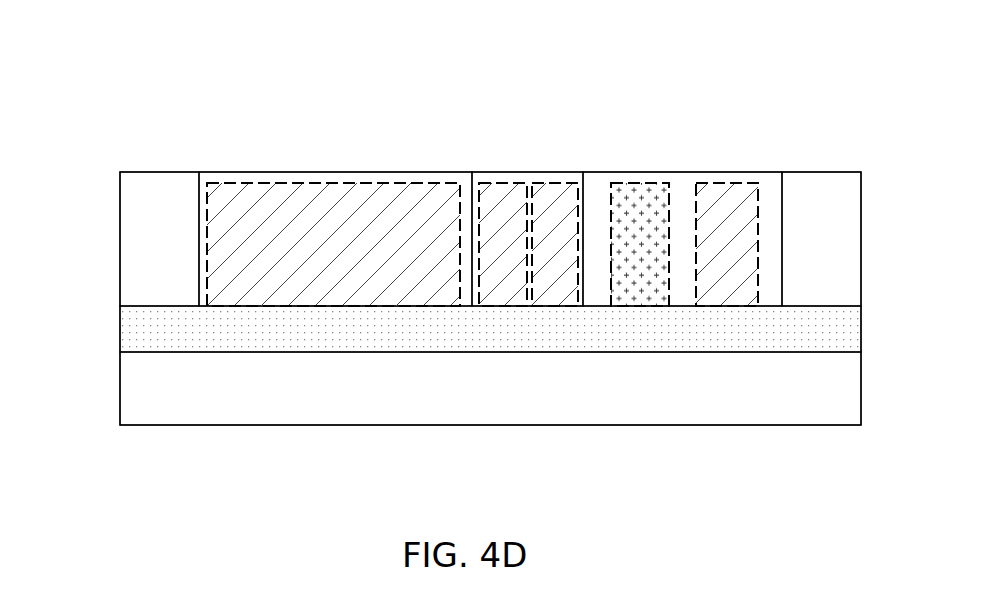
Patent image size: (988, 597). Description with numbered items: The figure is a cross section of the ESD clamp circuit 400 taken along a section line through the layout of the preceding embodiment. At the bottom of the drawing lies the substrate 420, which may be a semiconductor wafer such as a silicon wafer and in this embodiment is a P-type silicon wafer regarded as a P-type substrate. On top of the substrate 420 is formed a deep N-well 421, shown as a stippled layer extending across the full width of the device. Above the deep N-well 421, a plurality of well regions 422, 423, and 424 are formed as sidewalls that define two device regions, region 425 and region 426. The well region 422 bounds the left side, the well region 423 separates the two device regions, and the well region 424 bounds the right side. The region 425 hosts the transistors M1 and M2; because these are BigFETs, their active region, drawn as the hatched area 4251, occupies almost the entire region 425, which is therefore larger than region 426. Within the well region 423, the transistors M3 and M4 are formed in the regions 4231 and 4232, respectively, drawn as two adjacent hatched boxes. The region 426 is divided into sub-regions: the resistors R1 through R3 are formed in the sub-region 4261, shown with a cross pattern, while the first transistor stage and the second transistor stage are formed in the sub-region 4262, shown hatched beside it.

The ESD clamp circuit 400 is at (140, 38).
The substrate 420 is at (137, 385).
The deep N-well 421 is at (130, 325).
The well region 422 is at (135, 232).
The well region 423 is at (519, 188).
The region 4231 is at (492, 197).
The region 4232 is at (557, 197).
The well region 424 is at (813, 192).
The region 425 is at (335, 189).
The doped region of first device region 4251 is at (290, 197).
The region 426 is at (682, 187).
The sub-region 4261 is at (641, 195).
The sub-region 4262 is at (727, 195).